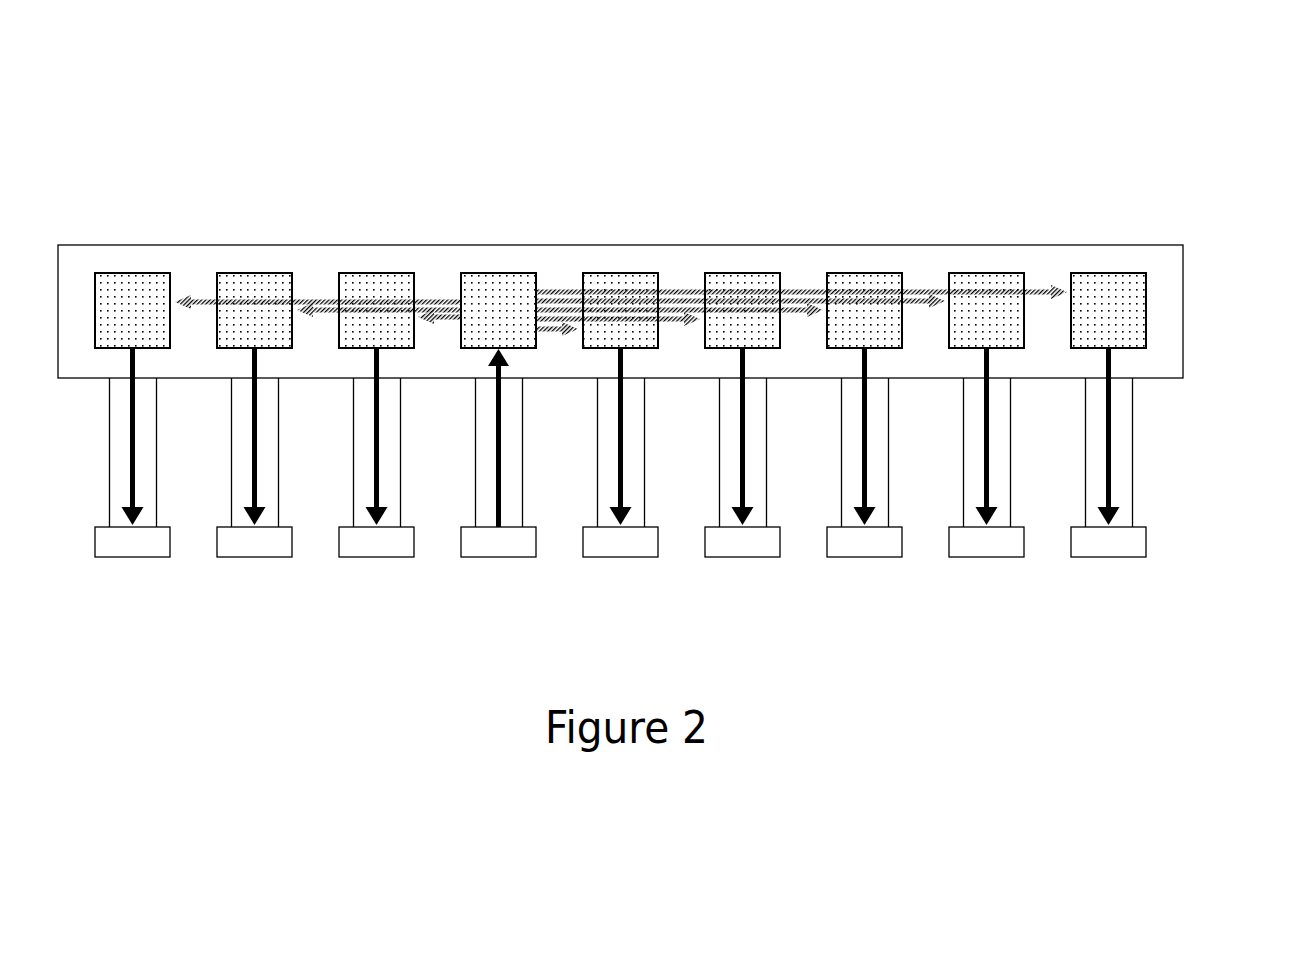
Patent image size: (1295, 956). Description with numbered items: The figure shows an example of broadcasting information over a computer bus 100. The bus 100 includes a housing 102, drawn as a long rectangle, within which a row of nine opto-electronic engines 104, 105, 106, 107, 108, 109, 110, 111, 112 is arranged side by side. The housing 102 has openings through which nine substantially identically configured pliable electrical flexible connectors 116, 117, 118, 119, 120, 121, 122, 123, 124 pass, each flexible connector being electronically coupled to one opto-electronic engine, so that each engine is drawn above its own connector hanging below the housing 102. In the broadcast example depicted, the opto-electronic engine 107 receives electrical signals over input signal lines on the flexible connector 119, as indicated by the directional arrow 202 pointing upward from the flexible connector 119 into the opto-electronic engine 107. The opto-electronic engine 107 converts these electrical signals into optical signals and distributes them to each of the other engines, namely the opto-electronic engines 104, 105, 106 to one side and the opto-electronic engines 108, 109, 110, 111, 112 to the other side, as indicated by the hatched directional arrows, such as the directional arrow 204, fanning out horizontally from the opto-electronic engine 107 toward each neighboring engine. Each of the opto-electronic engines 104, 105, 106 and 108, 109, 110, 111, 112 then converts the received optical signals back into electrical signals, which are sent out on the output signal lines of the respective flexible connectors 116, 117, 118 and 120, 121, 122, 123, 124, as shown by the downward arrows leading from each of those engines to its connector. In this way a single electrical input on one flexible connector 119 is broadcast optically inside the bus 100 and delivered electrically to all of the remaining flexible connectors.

The bus 100 is at (1042, 68).
The housing 102 is at (1183, 335).
The opto-electronic engine 104 is at (134, 282).
The opto-electronic engine 105 is at (256, 282).
The opto-electronic engine 106 is at (378, 282).
The opto-electronic engine 107 is at (500, 282).
The opto-electronic engine 108 is at (622, 282).
The opto-electronic engine 109 is at (744, 282).
The opto-electronic engine 110 is at (866, 282).
The opto-electronic engine 111 is at (988, 282).
The opto-electronic engine 112 is at (1110, 282).
The flexible connector 116 is at (156, 487).
The flexible connector 117 is at (278, 487).
The flexible connector 118 is at (400, 487).
The flexible connector 119 is at (522, 487).
The flexible connector 120 is at (644, 487).
The flexible connector 121 is at (766, 487).
The flexible connector 122 is at (888, 487).
The flexible connector 123 is at (1010, 487).
The flexible connector 124 is at (1132, 487).
The directional arrow 202 is at (501, 430).
The directional arrow 204 is at (437, 300).